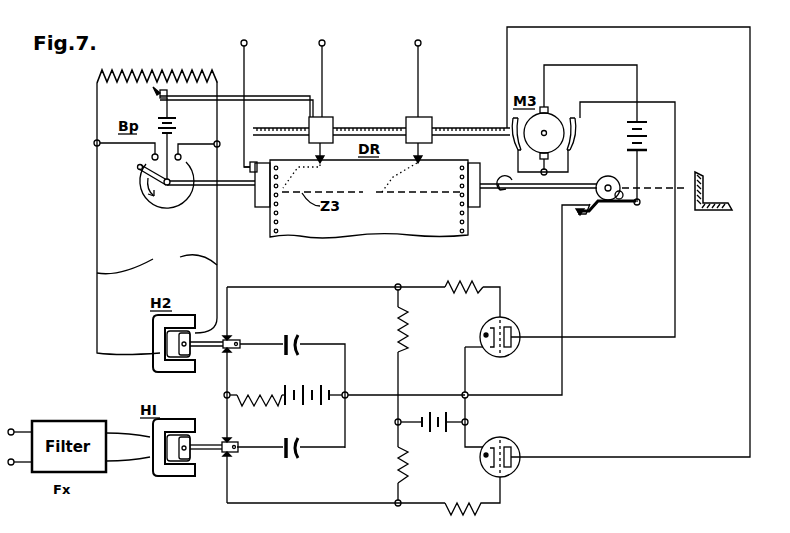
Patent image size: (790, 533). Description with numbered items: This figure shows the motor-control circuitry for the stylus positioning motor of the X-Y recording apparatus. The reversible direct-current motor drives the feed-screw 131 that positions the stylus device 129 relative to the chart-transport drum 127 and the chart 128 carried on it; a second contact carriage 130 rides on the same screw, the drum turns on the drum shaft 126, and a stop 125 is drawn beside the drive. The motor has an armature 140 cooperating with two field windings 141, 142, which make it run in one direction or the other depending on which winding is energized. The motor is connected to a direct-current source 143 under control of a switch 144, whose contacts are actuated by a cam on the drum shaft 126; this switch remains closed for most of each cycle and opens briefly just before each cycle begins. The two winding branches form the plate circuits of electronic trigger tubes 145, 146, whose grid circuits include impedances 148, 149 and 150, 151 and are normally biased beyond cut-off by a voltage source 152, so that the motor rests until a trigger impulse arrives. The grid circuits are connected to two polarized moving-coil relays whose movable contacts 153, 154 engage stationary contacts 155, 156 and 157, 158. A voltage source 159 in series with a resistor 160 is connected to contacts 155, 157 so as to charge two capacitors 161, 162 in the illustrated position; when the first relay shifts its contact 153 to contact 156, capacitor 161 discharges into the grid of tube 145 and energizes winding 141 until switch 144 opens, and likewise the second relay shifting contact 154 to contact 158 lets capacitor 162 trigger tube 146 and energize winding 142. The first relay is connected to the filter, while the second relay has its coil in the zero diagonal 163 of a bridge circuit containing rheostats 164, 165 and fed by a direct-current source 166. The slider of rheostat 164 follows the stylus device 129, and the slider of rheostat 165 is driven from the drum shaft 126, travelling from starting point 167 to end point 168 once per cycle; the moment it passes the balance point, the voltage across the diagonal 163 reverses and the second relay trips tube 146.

The stop bracket 125 is at (722, 204).
The drum shaft 126 is at (244, 184).
The chart-transport drum 127 is at (266, 203).
The chart 128 is at (333, 230).
The stylus device 129 is at (331, 120).
The contact carriage 130 is at (432, 119).
The feed-screw 131 is at (388, 118).
The armature 140 is at (557, 119).
The field winding 141 is at (512, 143).
The field winding 142 is at (576, 145).
The direct-current source 143 is at (629, 124).
The switch 144 is at (610, 202).
The electronic trigger tube 145 is at (512, 467).
The electronic trigger tube 146 is at (523, 320).
The impedance 148 is at (407, 468).
The impedance 149 is at (458, 501).
The impedance 150 is at (409, 329).
The impedance 151 is at (487, 271).
The voltage source 152 is at (426, 433).
The movable contact 153 is at (238, 449).
The movable contact 154 is at (245, 331).
The stationary contact 155 is at (230, 438).
The stationary contact 156 is at (231, 466).
The stationary contact 157 is at (233, 351).
The stationary contact 158 is at (231, 329).
The voltage source 159 is at (306, 373).
The resistor 160 is at (272, 393).
The capacitor 161 is at (300, 458).
The capacitor 162 is at (310, 331).
The zero diagonal 163 is at (157, 262).
The rheostat 164 is at (181, 70).
The rheostat 165 is at (176, 205).
The direct-current source 166 is at (176, 125).
The starting point 167 is at (151, 156).
The end point 168 is at (181, 157).